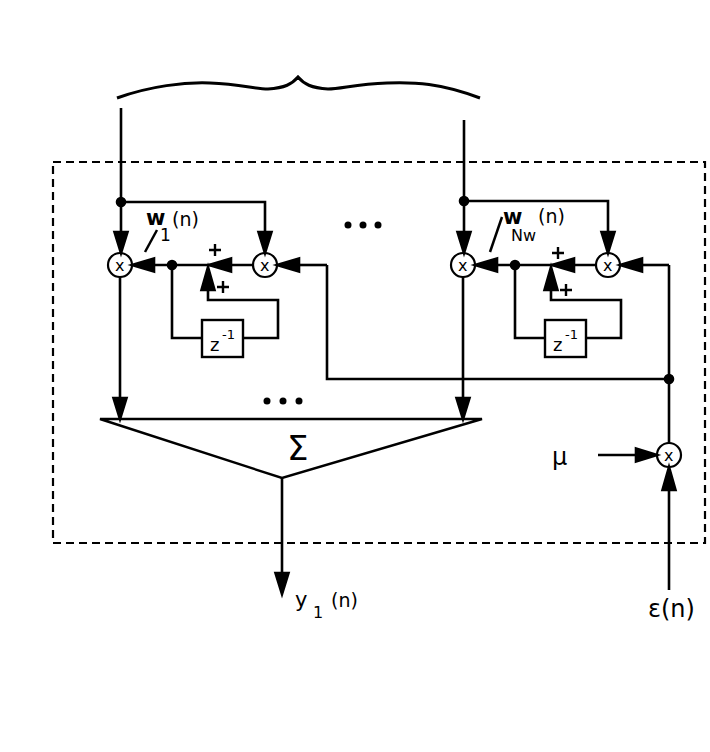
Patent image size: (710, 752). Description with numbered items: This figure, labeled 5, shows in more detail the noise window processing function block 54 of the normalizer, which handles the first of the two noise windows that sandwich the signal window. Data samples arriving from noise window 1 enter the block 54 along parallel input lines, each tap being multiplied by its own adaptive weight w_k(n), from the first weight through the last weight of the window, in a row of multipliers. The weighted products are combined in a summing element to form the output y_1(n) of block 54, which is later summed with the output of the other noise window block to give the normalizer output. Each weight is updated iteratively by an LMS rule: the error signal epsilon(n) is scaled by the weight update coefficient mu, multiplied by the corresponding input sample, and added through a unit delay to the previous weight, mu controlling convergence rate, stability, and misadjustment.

The noise window processing function block 54 is at (478, 543).
The input from noise window 1 is at (298, 122).
The figure 5 caption 5 is at (284, 717).